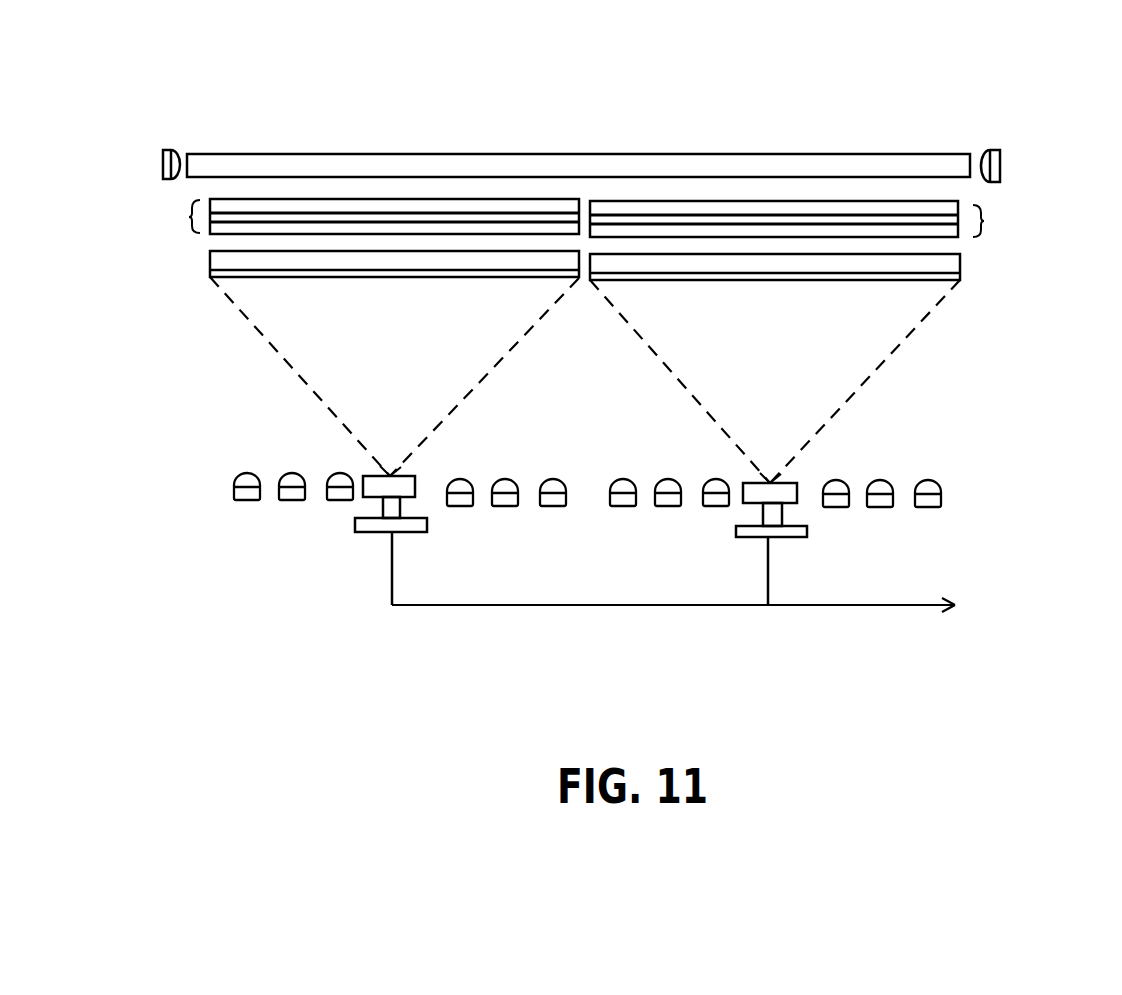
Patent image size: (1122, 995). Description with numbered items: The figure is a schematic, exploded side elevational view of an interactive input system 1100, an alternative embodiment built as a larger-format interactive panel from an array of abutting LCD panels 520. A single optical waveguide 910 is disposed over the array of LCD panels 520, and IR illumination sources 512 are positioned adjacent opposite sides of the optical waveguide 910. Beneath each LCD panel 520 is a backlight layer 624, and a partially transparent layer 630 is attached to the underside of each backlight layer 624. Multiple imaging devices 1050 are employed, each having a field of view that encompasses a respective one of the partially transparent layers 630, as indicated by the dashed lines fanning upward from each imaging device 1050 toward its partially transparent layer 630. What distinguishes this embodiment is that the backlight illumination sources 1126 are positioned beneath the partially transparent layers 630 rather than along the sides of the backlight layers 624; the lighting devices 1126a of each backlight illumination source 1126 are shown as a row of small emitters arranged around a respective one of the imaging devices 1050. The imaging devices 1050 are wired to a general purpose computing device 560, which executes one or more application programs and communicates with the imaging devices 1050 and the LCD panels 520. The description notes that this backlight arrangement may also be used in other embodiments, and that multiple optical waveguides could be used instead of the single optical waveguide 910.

The interactive input system 1100 is at (291, 96).
The IR illumination source 512 is at (160, 158).
The optical waveguide 910 is at (715, 165).
The LCD panel 520 is at (584, 220).
The backlight layer 624 is at (343, 255).
The partially transparent layer 630 is at (407, 272).
The imaging device 1050 is at (387, 523).
The computing device 560 is at (757, 612).
The backlight illumination source 1126 is at (977, 449).
The lighting device 1126a is at (285, 477).